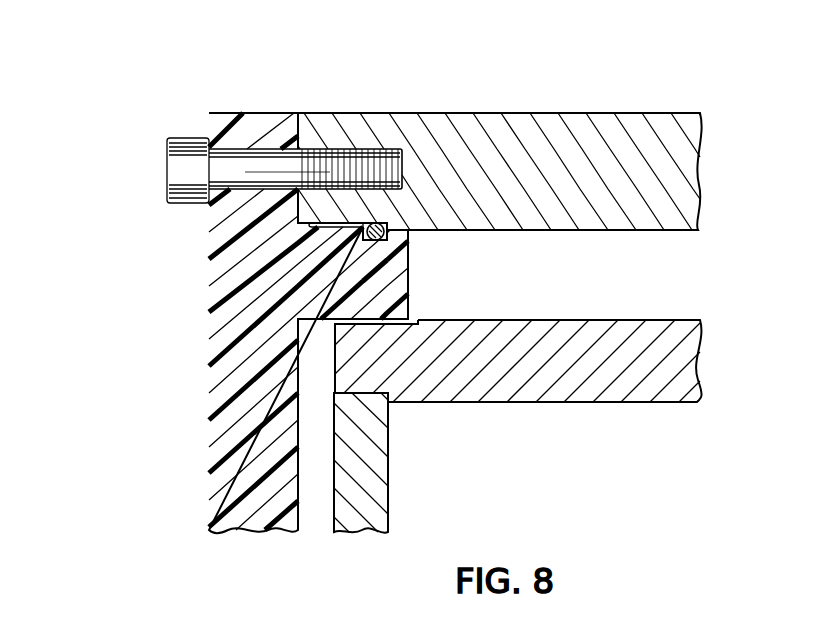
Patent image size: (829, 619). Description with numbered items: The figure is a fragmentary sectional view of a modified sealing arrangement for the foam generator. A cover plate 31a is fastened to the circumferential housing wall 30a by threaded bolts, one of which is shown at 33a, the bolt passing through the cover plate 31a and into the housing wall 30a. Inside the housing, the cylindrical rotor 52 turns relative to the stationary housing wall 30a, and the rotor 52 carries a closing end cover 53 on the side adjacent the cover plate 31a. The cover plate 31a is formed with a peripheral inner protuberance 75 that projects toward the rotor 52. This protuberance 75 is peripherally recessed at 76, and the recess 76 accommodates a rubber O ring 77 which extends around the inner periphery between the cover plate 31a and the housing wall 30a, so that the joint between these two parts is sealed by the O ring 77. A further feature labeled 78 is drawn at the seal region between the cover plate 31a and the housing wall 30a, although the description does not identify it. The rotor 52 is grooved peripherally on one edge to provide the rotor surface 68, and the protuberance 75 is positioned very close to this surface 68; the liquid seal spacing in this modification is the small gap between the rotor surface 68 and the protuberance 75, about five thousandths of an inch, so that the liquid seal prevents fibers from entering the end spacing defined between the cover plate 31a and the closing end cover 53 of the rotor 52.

The housing wall 30a is at (622, 113).
The cover plate 31a is at (207, 407).
The threaded bolt 33a is at (192, 138).
The cylindrical rotor 52 is at (639, 320).
The closing end cover 53 is at (389, 517).
The rotor surface 68 is at (416, 319).
The peripheral inner protuberance 75 is at (408, 278).
The peripheral recess 76 is at (386, 239).
The rubber O ring 77 is at (380, 222).
The seal groove 78 is at (388, 224).